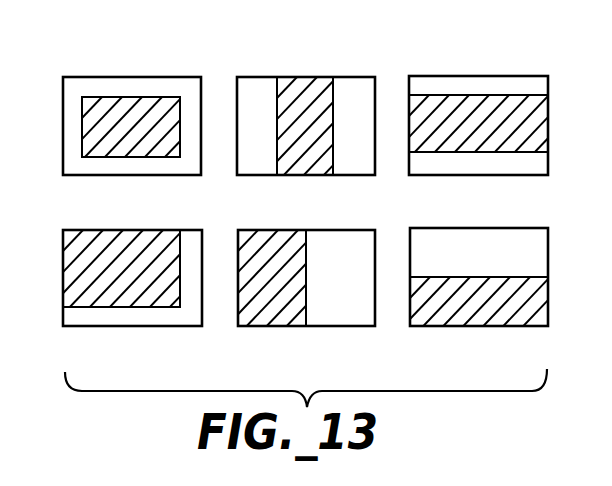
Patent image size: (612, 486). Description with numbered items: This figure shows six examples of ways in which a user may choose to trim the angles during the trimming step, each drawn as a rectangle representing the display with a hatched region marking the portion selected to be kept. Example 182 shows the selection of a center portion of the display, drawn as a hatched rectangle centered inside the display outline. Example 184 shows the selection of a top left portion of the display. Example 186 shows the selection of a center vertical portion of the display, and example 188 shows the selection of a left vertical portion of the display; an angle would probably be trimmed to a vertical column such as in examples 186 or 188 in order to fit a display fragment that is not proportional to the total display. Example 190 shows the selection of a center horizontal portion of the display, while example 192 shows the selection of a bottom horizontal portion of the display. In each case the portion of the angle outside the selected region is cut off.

The example of center portion trimming 182 is at (122, 63).
The example of top left portion trimming 184 is at (124, 341).
The example of center vertical portion trimming 186 is at (305, 62).
The example of left vertical portion trimming 188 is at (288, 340).
The example of center horizontal portion trimming 190 is at (459, 61).
The example of bottom horizontal portion trimming 192 is at (451, 340).